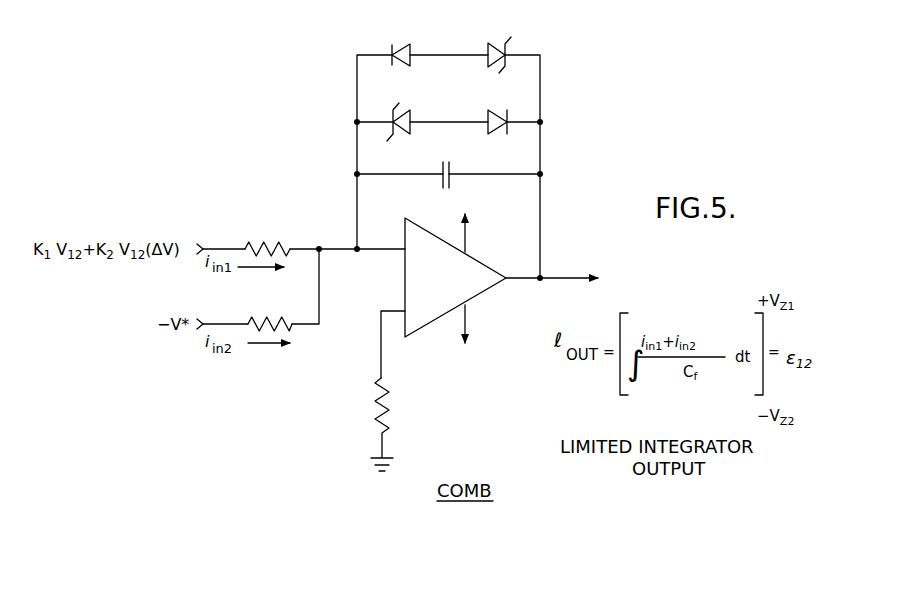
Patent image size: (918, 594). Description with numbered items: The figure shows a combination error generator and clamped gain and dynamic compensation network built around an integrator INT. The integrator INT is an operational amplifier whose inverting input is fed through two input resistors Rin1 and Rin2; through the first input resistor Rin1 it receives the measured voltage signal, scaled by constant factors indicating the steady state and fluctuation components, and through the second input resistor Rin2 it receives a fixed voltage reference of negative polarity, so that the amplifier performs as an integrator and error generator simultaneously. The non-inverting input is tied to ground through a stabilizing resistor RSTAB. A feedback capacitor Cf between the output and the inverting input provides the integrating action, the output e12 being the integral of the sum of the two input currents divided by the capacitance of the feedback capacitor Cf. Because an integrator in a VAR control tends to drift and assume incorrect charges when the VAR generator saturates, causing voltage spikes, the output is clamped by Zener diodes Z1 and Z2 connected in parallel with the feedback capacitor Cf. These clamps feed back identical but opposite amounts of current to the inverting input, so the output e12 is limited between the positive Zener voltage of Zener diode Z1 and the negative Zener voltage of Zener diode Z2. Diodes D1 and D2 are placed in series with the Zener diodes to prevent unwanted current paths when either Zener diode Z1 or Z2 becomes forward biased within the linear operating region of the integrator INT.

The diode D1 is at (403, 44).
The Zener diode Z1 is at (497, 44).
The Zener diode Z2 is at (398, 108).
The diode D2 is at (497, 108).
The feedback capacitor Cf is at (433, 179).
The input resistor Rin1 is at (266, 233).
The input resistor Rin2 is at (268, 310).
The integrator INT is at (455, 278).
The stabilizing resistor RSTAB is at (385, 415).
The integrator output e12 is at (566, 278).